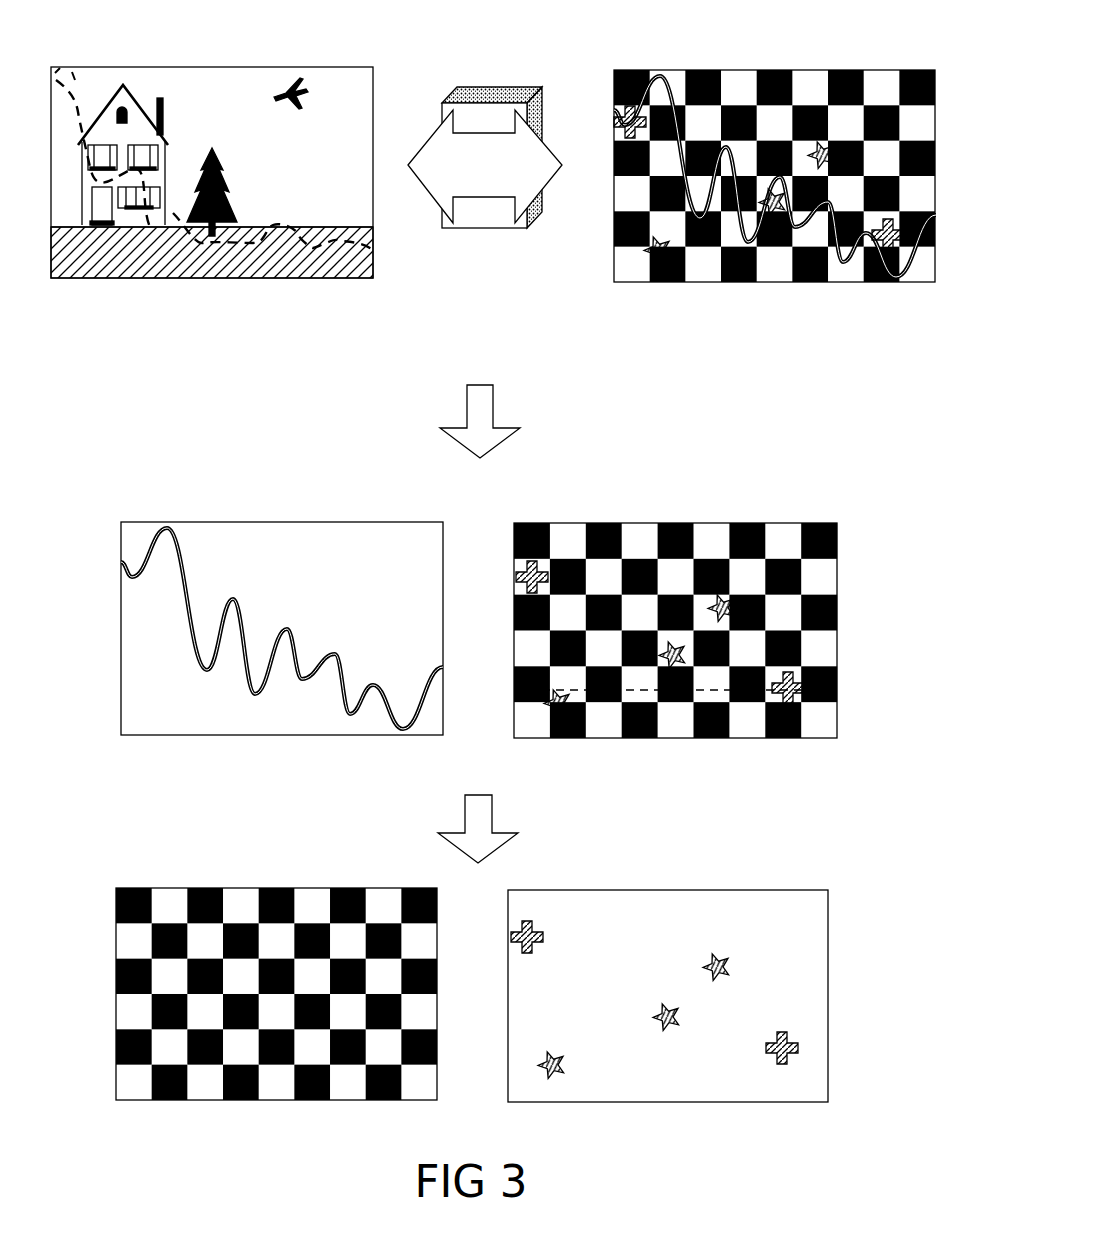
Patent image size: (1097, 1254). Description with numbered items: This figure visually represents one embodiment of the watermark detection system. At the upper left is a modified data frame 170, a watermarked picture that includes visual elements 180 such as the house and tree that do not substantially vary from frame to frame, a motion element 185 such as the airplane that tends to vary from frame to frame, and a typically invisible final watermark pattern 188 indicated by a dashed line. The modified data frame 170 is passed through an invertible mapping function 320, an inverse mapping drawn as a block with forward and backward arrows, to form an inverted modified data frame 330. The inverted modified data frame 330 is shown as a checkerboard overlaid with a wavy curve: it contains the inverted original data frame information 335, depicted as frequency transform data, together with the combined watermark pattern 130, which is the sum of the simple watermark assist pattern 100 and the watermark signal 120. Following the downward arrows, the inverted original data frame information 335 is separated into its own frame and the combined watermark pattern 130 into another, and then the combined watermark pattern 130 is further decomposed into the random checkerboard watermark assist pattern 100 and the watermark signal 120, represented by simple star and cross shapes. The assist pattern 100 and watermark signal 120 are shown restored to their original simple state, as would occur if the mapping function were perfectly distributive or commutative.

The watermark assist pattern 100 is at (813, 78).
The watermark signal 120 is at (650, 250).
The combined watermark signal 130 is at (700, 740).
The modified data frame 170 is at (123, 282).
The visual elements 180 is at (226, 183).
The motion element 185 is at (294, 104).
The final watermark pattern 188 is at (78, 82).
The invertible mapping function 320 is at (525, 228).
The inverted modified data frame 330 is at (700, 283).
The inverted original data frame information 335 is at (667, 93).